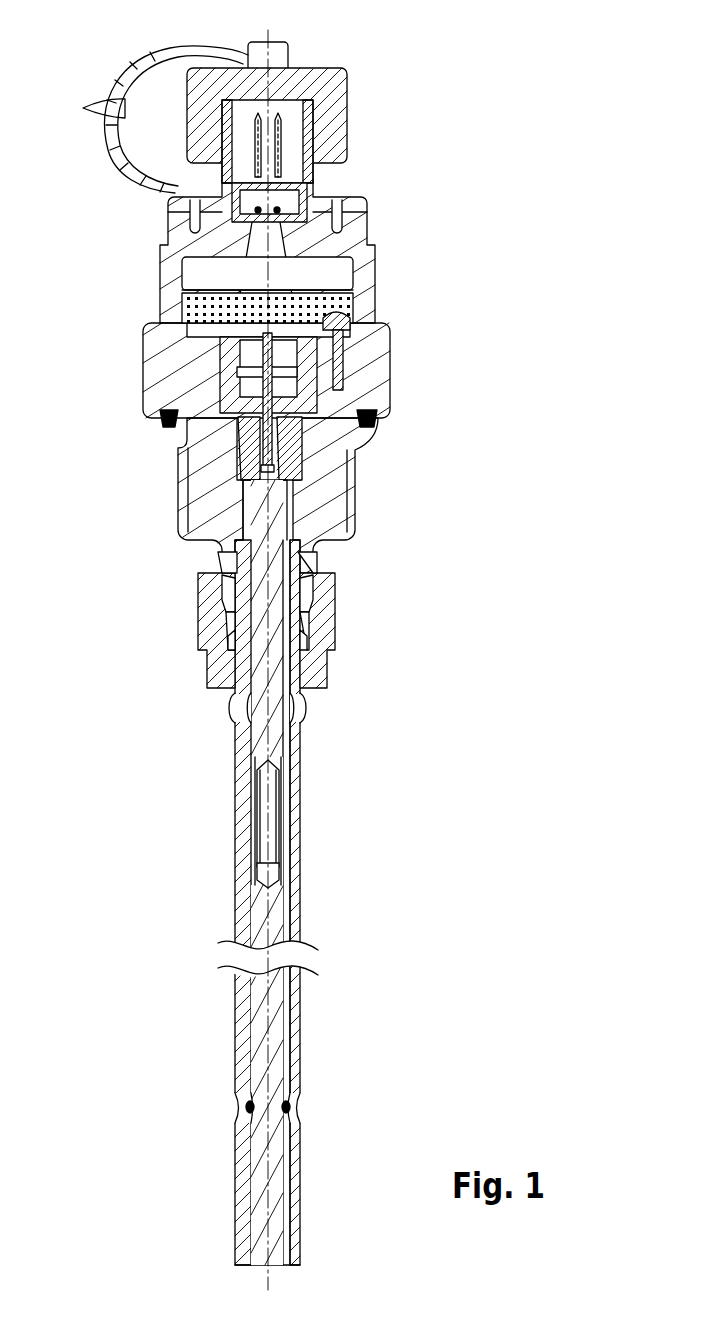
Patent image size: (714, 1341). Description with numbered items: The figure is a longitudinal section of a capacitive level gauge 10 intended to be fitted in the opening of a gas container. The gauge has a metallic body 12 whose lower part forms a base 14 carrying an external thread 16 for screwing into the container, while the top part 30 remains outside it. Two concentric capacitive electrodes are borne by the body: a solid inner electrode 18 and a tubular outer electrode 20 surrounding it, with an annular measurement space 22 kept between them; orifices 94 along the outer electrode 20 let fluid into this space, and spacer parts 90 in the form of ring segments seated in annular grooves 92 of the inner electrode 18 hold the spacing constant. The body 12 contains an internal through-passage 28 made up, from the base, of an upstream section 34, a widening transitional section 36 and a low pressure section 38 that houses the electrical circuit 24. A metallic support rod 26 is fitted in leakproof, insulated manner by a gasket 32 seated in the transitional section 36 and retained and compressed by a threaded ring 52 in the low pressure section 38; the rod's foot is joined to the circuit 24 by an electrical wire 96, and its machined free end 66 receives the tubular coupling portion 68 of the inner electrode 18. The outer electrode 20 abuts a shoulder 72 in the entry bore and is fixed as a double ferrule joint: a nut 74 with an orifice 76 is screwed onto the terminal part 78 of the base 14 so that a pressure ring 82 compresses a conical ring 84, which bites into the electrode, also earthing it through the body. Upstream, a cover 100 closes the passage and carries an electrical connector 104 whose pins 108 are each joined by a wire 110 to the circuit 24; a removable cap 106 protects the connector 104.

The gauge 10 is at (457, 92).
The removable cap 106 is at (330, 83).
The pins 108 is at (250, 157).
The electrical connector 104 is at (310, 120).
The cover 100 is at (365, 222).
The wire 110 is at (240, 272).
The electrical circuit 24 is at (188, 330).
The low pressure section 38 is at (210, 378).
The body 12 is at (160, 378).
The electrical wire 96 is at (345, 352).
The top part 30 is at (452, 390).
The gasket 32 is at (192, 447).
The ring 52 is at (368, 418).
The external thread 16 is at (185, 472).
The transitional section 36 is at (305, 470).
The internal through-passage 28 is at (232, 512).
The upstream section 34 is at (305, 500).
The base 14 is at (200, 522).
The shoulder 72 is at (233, 563).
The metallic support rod 26 is at (277, 595).
The terminal part 78 is at (230, 597).
The conical ring 84 is at (227, 612).
The nut 74 is at (352, 635).
The pressure ring 82 is at (225, 647).
The orifices 94 is at (298, 705).
The orifice 76 is at (240, 712).
The tubular electrode 20 is at (238, 762).
The free end 66 is at (264, 838).
The coupling portion 68 is at (275, 873).
The annular measurement space 22 is at (248, 918).
The inner electrode 18 is at (262, 1055).
The spacer parts 90 is at (290, 1108).
The annular grooves 92 is at (250, 1112).